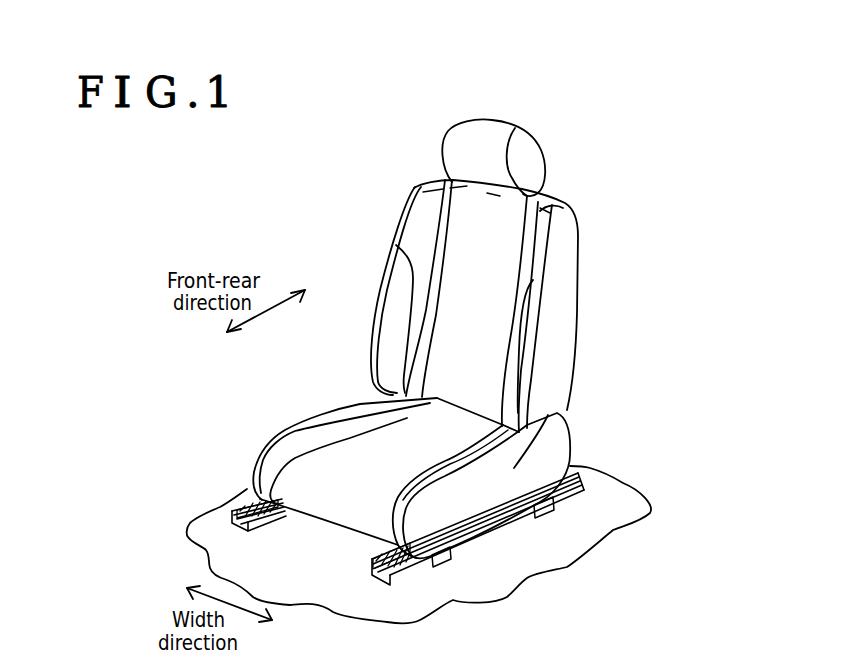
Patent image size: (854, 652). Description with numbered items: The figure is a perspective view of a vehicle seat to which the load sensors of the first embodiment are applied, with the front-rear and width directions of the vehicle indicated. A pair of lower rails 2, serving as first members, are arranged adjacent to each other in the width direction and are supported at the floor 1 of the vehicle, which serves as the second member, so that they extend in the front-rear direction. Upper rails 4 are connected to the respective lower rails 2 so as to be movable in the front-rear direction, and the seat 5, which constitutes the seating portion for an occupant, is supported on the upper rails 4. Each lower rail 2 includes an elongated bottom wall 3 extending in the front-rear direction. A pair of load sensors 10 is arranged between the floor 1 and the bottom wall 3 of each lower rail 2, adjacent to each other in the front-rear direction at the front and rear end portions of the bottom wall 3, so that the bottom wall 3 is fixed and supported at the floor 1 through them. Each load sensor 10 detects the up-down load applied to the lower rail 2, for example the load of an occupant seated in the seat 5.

The floor 1 is at (608, 494).
The lower rail 2 is at (428, 572).
The bottom wall 3 is at (373, 582).
The upper rail 4 is at (398, 553).
The seat 5 is at (282, 375).
The load sensor 10 is at (552, 511).